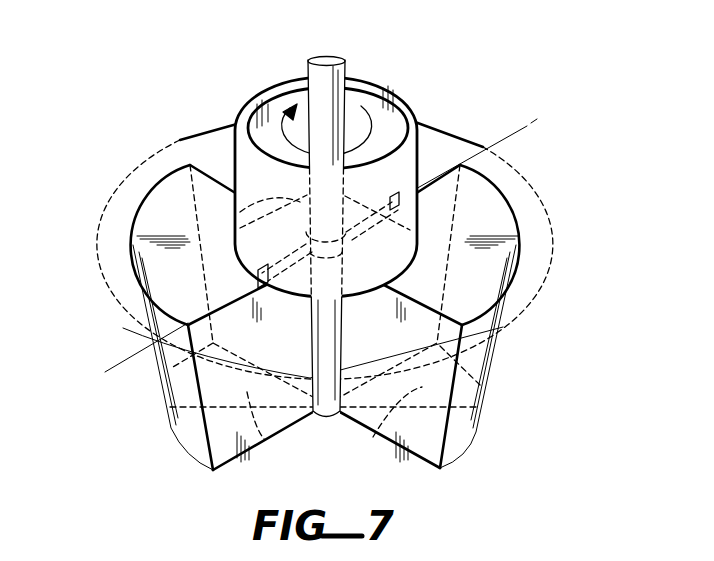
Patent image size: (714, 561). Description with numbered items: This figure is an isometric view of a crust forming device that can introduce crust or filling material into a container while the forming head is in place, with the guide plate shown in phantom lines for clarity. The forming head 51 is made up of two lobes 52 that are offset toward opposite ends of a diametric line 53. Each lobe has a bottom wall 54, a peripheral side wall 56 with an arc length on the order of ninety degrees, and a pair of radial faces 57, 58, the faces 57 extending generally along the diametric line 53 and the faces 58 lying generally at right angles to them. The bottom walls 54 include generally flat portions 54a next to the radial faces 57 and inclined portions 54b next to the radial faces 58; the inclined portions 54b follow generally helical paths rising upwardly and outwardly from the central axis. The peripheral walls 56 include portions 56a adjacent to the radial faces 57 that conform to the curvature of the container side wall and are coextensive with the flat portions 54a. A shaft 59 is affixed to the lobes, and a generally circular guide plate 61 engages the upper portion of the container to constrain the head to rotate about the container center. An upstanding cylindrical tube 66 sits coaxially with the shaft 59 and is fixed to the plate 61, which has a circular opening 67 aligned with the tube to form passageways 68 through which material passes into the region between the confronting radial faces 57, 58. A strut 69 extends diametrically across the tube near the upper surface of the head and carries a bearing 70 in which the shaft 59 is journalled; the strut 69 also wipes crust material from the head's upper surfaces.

The forming head 51 is at (328, 421).
The lobe 52 is at (165, 210).
The diametric line 53 is at (514, 139).
The bottom wall 54 is at (222, 469).
The flat portion 54a is at (200, 435).
The inclined portion 54b is at (266, 440).
The peripheral side wall 56 is at (137, 264).
The peripheral wall portion 56a is at (510, 253).
The radial face 57 is at (437, 170).
The radial face 58 is at (196, 158).
The shaft 59 is at (346, 67).
The guide plate 61 is at (433, 137).
The cylindrical tube 66 is at (240, 106).
The circular opening 67 is at (395, 272).
The passageway 68 is at (292, 197).
The strut 69 is at (363, 195).
The bearing 70 is at (350, 248).